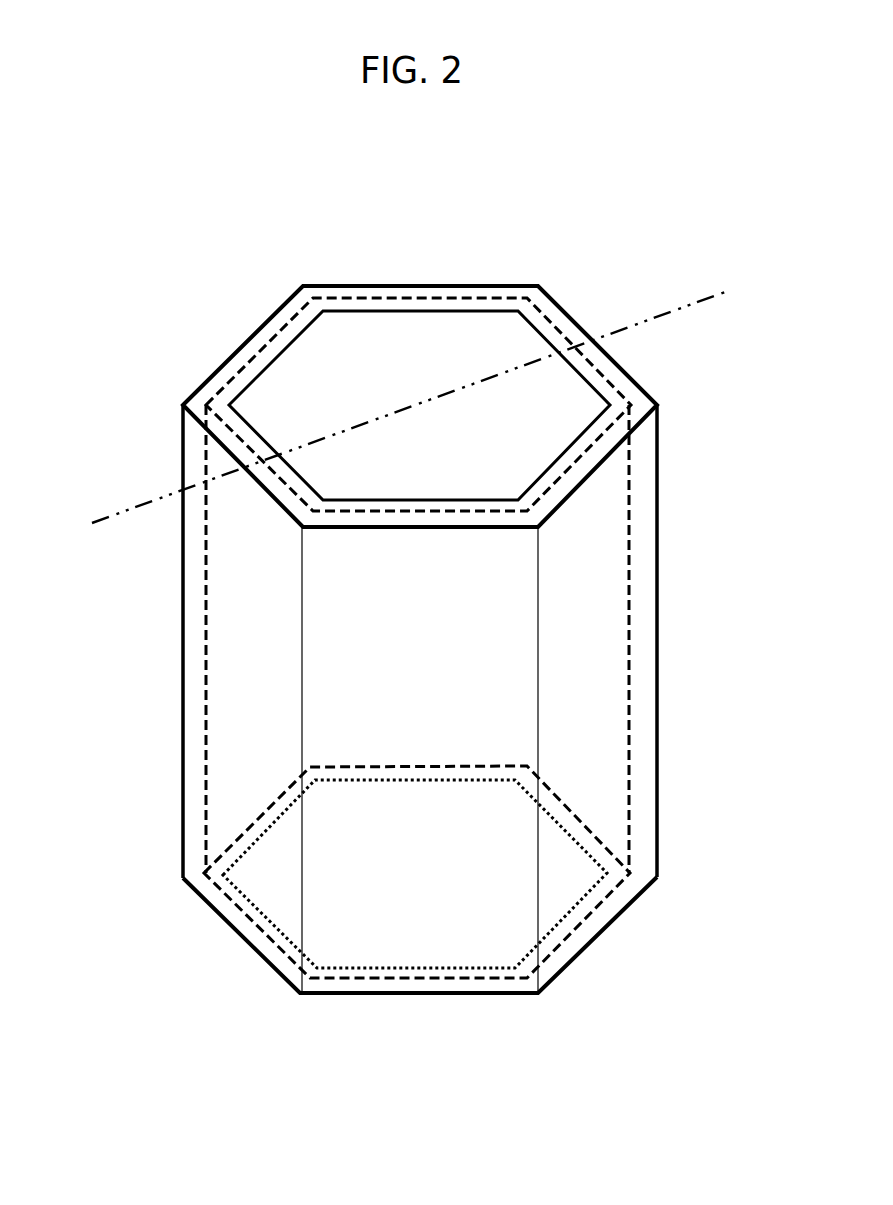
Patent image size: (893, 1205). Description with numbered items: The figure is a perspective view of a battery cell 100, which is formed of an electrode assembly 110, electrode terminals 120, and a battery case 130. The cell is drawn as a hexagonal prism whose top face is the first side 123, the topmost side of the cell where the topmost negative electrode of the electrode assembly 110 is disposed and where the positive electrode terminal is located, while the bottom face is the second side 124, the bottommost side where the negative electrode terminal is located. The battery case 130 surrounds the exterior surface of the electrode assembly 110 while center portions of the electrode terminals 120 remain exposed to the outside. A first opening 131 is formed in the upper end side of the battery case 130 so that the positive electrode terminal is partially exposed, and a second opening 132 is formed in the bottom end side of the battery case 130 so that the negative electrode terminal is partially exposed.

The battery cell 100 is at (151, 261).
The electrode assembly 110 is at (215, 698).
The electrode terminals 120 is at (377, 333).
The first side 123 is at (220, 347).
The second side 124 is at (573, 970).
The battery case 130 is at (657, 598).
The first opening 131 is at (600, 373).
The second opening 132 is at (558, 920).